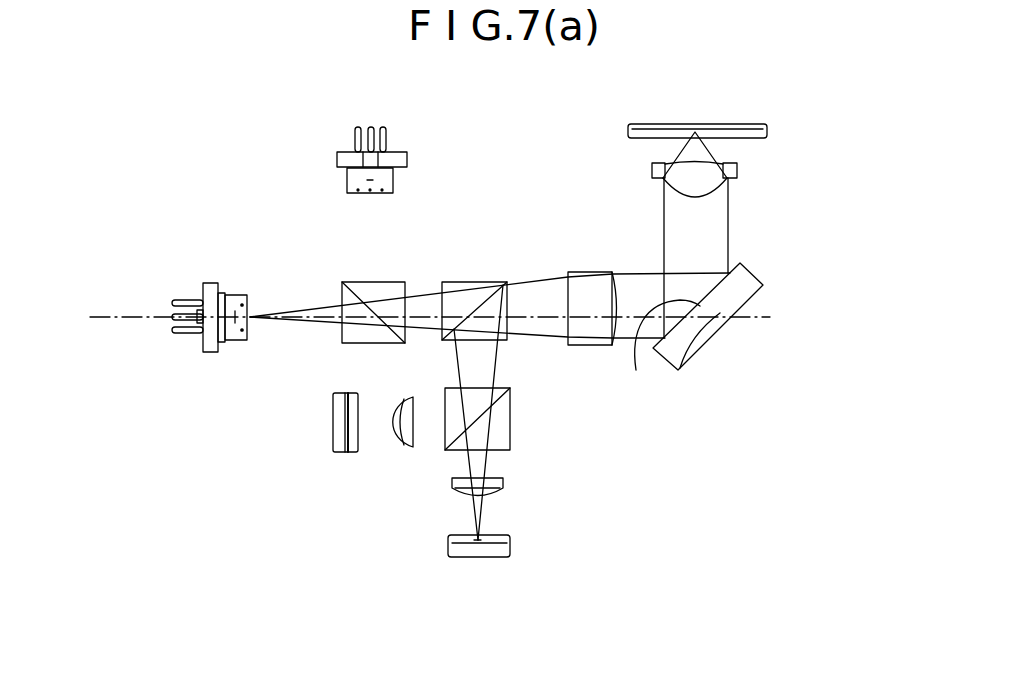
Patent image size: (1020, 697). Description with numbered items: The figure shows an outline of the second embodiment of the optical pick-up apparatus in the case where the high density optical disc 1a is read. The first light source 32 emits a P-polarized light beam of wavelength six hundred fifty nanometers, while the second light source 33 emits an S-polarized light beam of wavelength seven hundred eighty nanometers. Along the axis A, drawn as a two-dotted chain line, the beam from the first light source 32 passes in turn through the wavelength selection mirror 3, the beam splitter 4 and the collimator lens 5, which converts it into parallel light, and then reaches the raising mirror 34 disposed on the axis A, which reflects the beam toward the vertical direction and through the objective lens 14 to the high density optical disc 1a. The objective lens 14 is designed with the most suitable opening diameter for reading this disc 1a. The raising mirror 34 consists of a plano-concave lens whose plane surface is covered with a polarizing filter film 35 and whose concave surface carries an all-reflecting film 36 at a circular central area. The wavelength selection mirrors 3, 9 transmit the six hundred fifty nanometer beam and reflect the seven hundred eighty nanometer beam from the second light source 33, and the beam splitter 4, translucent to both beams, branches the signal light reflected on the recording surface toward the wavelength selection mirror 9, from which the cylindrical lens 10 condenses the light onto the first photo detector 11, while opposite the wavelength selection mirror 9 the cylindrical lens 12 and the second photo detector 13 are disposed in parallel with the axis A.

The high density optical disc 1a is at (767, 127).
The wavelength selection mirror 3 is at (363, 290).
The beam splitter 4 is at (470, 297).
The collimator lens 5 is at (588, 297).
The wavelength selection mirror 9 is at (503, 418).
The cylindrical lens 10 is at (497, 486).
The first photo detector 11 is at (505, 539).
The cylindrical lens 12 is at (408, 432).
The second photo detector 13 is at (338, 423).
The objective lens 14 is at (652, 171).
The first light source 32 is at (208, 295).
The second light source 33 is at (338, 162).
The raising mirror 34 is at (743, 283).
The polarizing filter film 35 is at (636, 370).
The all-reflecting film 36 is at (717, 316).
The axis A is at (326, 314).